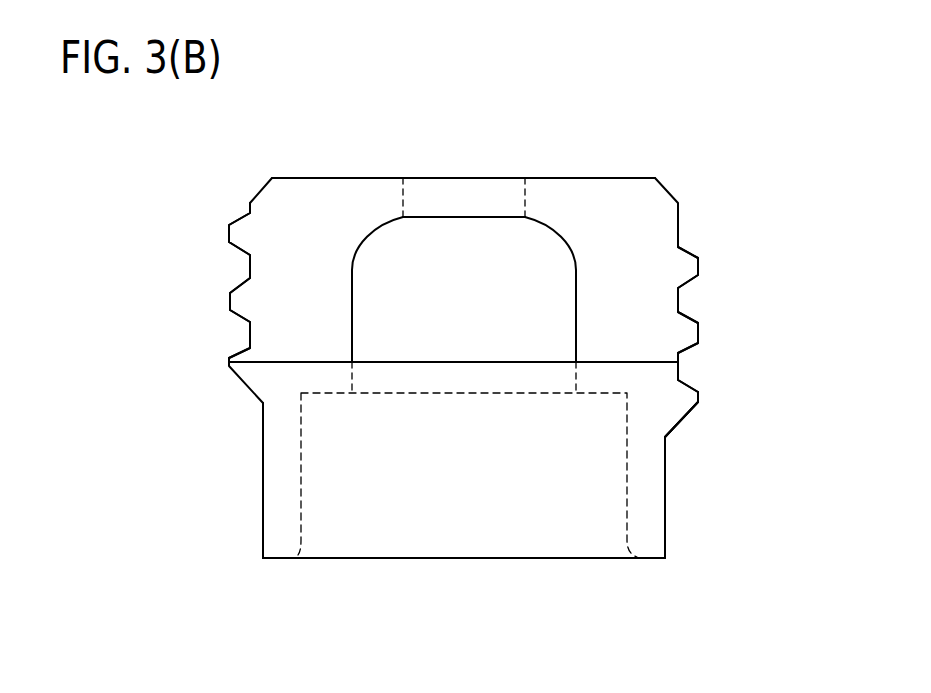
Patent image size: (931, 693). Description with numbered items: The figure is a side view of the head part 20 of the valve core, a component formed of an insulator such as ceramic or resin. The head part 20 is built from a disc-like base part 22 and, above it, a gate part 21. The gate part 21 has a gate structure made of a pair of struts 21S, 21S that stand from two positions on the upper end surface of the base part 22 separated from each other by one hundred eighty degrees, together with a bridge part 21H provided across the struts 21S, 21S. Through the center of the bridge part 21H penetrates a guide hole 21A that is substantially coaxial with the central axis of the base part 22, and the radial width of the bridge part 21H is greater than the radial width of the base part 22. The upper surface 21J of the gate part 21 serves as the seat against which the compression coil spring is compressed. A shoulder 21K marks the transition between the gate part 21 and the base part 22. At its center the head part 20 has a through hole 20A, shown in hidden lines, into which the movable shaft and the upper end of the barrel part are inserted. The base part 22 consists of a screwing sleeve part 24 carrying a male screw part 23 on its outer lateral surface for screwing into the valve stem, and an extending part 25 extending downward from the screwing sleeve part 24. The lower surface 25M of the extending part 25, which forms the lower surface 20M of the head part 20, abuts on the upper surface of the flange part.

The head part 20 is at (761, 145).
The gate part 21 is at (660, 214).
The upper surface of the gate part 21J is at (298, 178).
The guide hole 21A is at (523, 197).
The bridge part 21H is at (563, 220).
The strut 21S is at (295, 283).
The step portion 21K is at (290, 362).
The base part 22 is at (654, 398).
The male screw part 23 is at (690, 385).
The screwing sleeve part 24 is at (670, 422).
The through hole 20A is at (627, 450).
The extending part 25 is at (653, 522).
The lower surface of the extending part 25M is at (273, 560).
The lower surface of the head part 20M is at (282, 560).